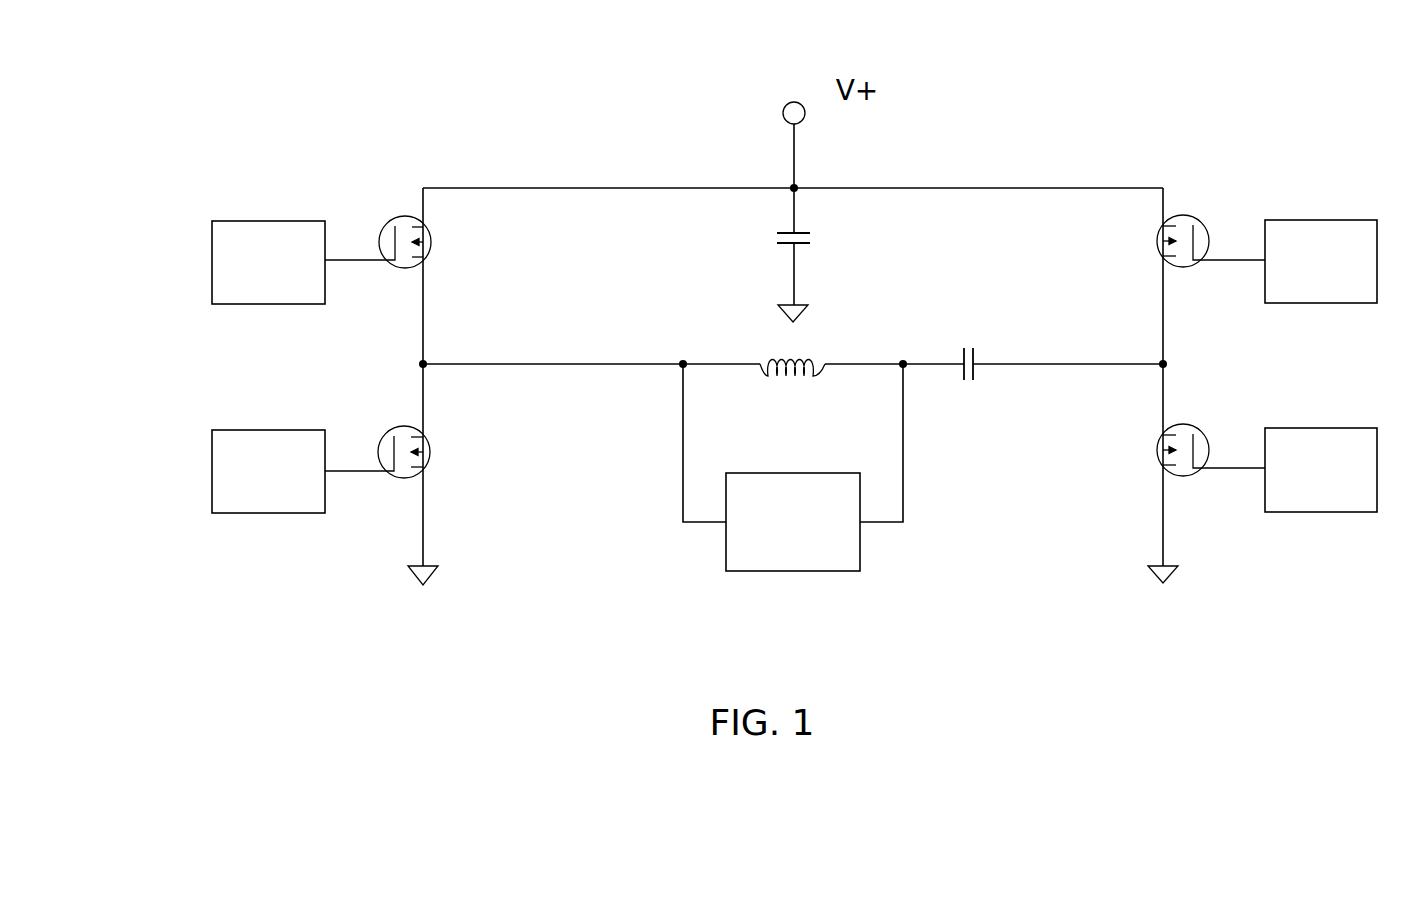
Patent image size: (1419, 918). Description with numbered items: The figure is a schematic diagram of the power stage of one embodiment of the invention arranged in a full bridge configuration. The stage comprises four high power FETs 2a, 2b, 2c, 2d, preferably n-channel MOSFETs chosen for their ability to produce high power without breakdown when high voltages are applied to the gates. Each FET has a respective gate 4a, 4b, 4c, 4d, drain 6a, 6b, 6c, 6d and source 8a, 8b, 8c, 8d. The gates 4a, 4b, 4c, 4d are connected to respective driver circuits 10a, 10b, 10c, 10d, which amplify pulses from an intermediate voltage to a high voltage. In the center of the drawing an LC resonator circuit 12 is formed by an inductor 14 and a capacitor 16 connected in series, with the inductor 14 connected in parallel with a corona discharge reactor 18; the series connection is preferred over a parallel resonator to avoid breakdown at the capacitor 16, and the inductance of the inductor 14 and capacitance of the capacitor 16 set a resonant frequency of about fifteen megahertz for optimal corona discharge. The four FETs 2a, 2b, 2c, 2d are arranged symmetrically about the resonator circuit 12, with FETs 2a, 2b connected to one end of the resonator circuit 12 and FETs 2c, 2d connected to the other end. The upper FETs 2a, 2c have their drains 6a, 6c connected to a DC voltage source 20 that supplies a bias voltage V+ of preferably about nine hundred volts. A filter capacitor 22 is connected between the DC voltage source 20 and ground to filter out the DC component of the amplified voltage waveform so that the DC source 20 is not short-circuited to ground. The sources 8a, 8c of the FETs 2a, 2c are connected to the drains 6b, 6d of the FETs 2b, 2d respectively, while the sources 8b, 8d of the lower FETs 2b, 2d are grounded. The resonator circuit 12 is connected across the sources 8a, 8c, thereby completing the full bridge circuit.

The high power FET 2a is at (386, 222).
The high power FET 2b is at (385, 432).
The high power FET 2c is at (1205, 222).
The high power FET 2d is at (1204, 431).
The gate 4a is at (388, 263).
The gate 4b is at (388, 473).
The gate 4c is at (1199, 262).
The gate 4d is at (1199, 471).
The drain 6a is at (418, 230).
The drain 6b is at (418, 440).
The drain 6c is at (1170, 229).
The drain 6d is at (1170, 438).
The source 8a is at (418, 258).
The source 8b is at (418, 468).
The source 8c is at (1170, 257).
The source 8d is at (1170, 466).
The driver circuit 10a is at (272, 221).
The driver circuit 10b is at (272, 430).
The driver circuit 10c is at (1322, 220).
The driver circuit 10d is at (1322, 428).
The LC resonator circuit 12 is at (858, 328).
The inductor 14 is at (780, 376).
The capacitor 16 is at (975, 376).
The corona discharge reactor 18 is at (861, 552).
The DC voltage source 20 is at (782, 113).
The filter capacitor 22 is at (797, 232).